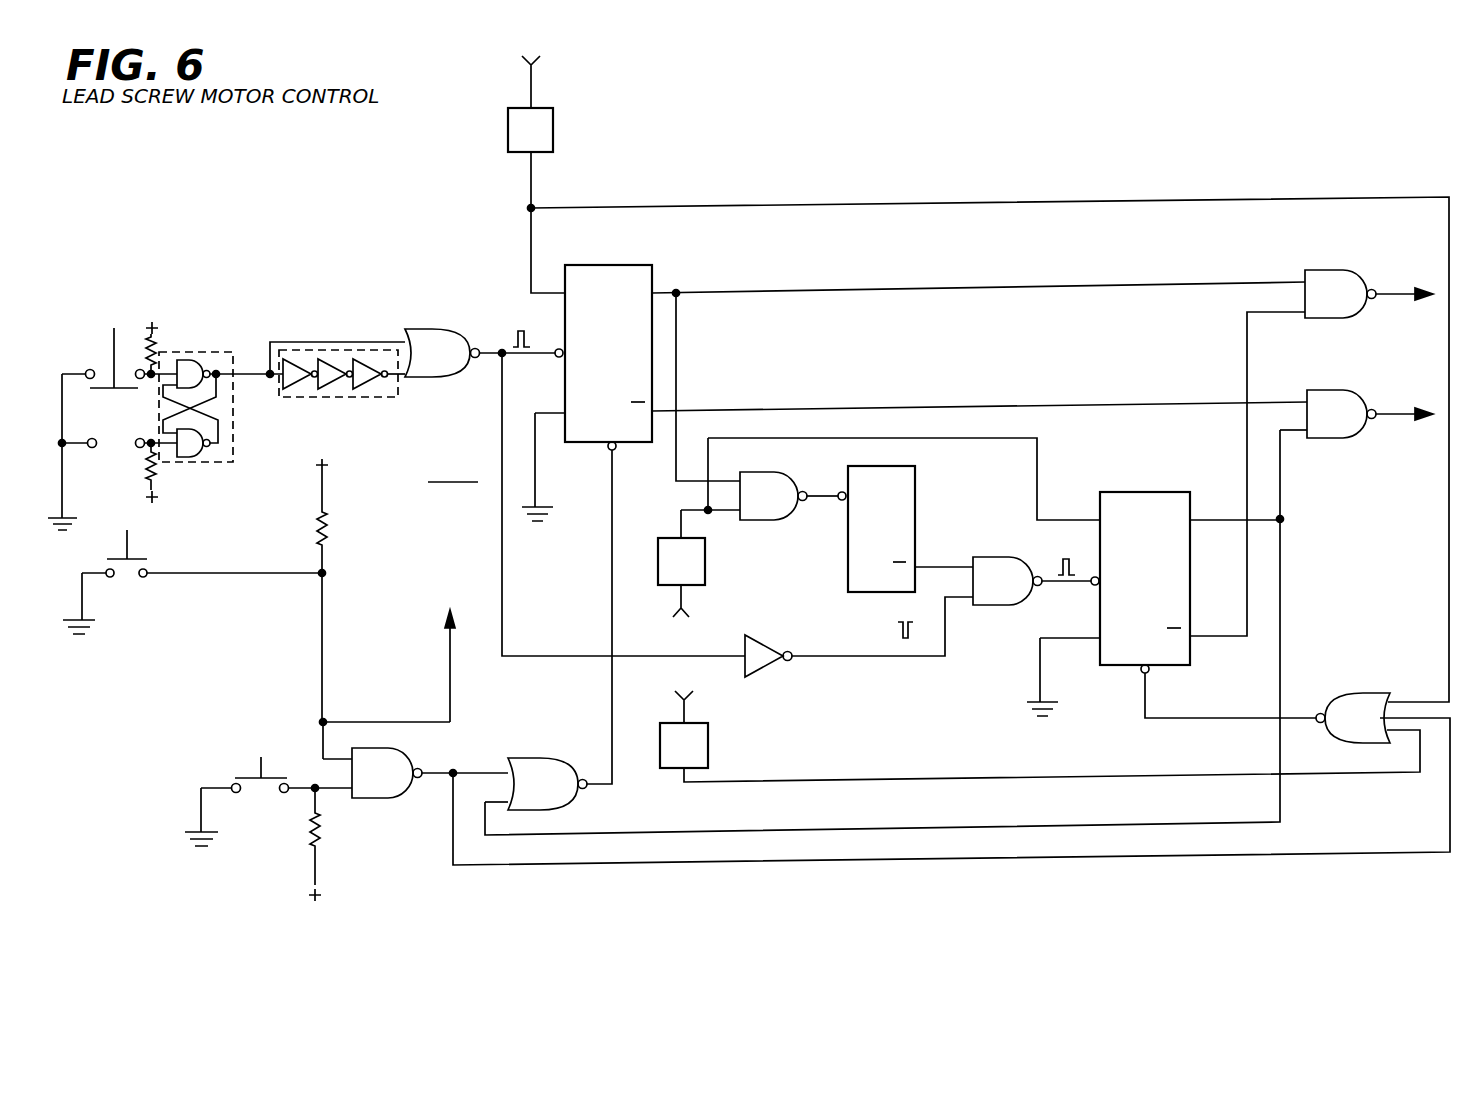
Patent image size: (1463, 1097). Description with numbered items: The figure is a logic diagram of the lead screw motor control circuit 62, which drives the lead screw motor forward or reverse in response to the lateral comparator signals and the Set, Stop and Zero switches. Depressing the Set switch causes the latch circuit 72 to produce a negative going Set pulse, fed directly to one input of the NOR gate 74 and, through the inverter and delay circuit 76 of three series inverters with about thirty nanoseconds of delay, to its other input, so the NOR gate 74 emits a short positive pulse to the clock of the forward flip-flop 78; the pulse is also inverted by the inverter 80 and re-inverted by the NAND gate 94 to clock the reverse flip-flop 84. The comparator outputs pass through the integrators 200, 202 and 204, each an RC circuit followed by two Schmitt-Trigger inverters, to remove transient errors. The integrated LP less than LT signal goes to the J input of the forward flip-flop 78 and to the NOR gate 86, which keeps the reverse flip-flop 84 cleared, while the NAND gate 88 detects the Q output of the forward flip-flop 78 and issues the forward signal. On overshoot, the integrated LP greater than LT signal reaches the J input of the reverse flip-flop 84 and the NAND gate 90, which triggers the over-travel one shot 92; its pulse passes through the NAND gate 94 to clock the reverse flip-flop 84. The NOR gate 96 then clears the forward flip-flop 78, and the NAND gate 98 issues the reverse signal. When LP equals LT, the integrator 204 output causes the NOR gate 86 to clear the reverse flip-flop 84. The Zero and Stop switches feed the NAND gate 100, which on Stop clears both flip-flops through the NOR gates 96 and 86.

The lead screw motor control circuit 62 is at (749, 469).
The latch circuit 72 is at (214, 376).
The NOR gate 74 is at (452, 334).
The inverter and delay circuit 76 is at (342, 348).
The forward flip-flop 78 is at (586, 268).
The inverter 80 is at (760, 640).
The reverse flip-flop 84 is at (1130, 492).
The NOR gate 86 is at (1365, 698).
The NAND gate 88 is at (1315, 272).
The NAND gate 90 is at (782, 473).
The over-travel one shot 92 is at (915, 489).
The NAND gate 94 is at (1010, 605).
The NOR gate 96 is at (538, 762).
The NAND gate 98 is at (1315, 392).
The NAND gate 100 is at (398, 760).
The integrator 200 is at (554, 117).
The integrator 202 is at (705, 568).
The integrator 204 is at (708, 735).